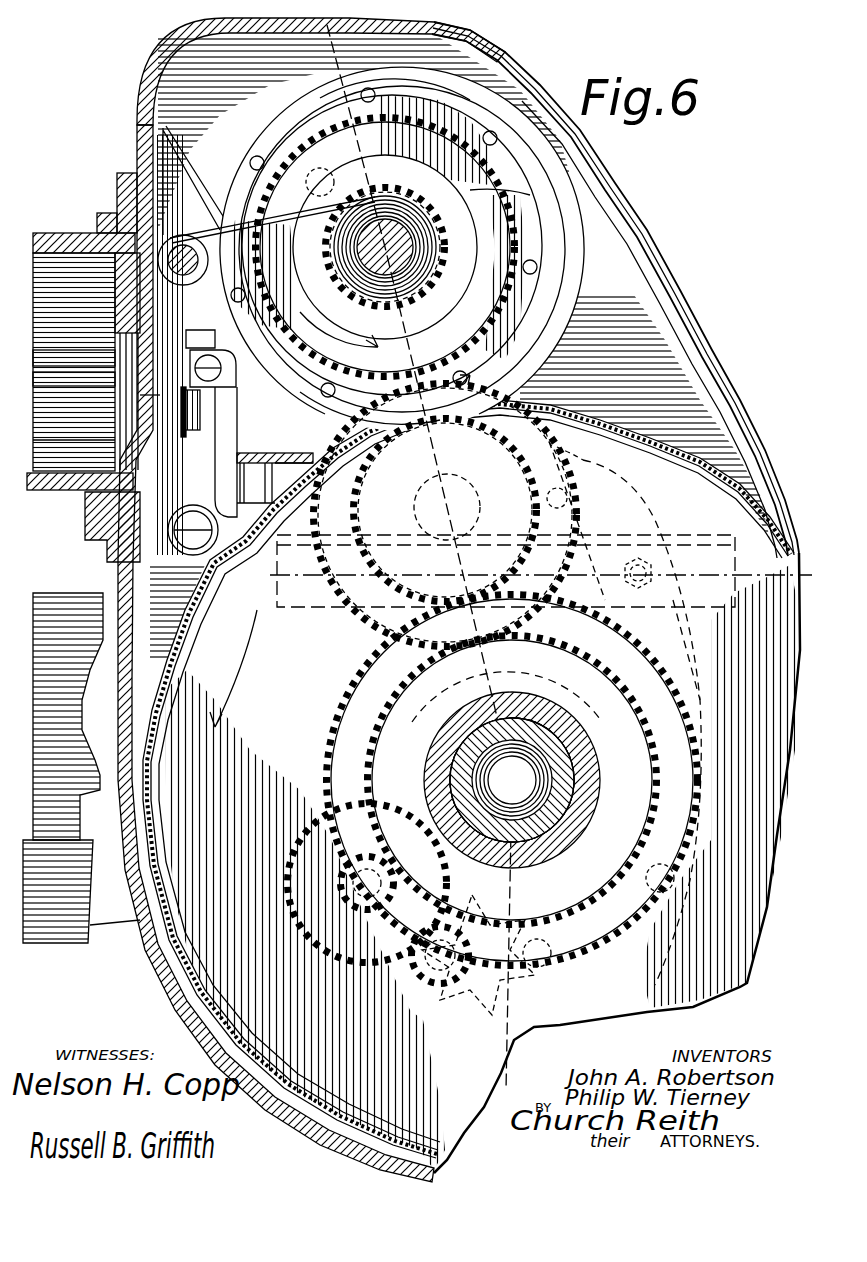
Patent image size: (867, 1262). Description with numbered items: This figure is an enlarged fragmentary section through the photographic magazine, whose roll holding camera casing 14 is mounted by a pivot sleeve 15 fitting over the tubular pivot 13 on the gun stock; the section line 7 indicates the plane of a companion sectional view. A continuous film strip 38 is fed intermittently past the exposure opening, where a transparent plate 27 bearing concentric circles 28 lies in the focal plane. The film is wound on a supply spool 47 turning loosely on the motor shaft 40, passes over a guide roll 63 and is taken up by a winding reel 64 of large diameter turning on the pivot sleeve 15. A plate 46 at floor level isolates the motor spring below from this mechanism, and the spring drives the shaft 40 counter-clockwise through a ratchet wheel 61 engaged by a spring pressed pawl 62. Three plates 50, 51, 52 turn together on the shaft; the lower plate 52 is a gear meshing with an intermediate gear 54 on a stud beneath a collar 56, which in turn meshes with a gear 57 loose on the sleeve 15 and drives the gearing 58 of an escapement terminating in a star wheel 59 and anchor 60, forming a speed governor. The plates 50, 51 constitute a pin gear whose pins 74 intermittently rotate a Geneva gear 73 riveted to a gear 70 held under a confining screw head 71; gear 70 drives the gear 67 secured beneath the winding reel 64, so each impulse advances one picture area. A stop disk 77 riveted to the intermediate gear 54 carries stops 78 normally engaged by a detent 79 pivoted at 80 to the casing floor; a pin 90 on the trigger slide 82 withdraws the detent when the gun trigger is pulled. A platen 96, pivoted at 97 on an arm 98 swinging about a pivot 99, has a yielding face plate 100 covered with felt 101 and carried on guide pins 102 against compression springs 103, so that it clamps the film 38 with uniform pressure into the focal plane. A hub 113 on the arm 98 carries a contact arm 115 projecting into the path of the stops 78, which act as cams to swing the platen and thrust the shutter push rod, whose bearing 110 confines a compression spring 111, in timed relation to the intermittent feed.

The section line 7- 7 is at (415, 557).
The tubular pivot 13 is at (556, 760).
The camera casing 14 is at (700, 333).
The pivot sleeve 15 is at (512, 205).
The transparent plate 27 is at (148, 400).
The concentric circles 28 is at (110, 428).
The film strip 38 is at (210, 215).
The motor shaft 40 is at (372, 262).
The plate 46 is at (400, 84).
The supply spool 47 is at (395, 278).
The disk 50 is at (475, 233).
The disk 51 is at (542, 258).
The gear 52 is at (507, 327).
The intermediate gear 54 is at (625, 486).
The collar 56 is at (330, 890).
The gear 57 is at (576, 717).
The gearing 58 is at (405, 975).
The star wheel 59 is at (459, 1010).
The anchor 60 is at (518, 1006).
The ratchet wheel 61 is at (368, 310).
The spring pressed pawl 62 is at (320, 177).
The guide roll 63 is at (160, 237).
The winding reel 64 is at (187, 950).
The gear 67 is at (678, 670).
The gear 70 is at (445, 510).
The confining screw head 71 is at (450, 485).
The Geneva gear 73 is at (650, 512).
The pins 74 is at (252, 160).
The stop disk 77 is at (419, 386).
The stops 78 is at (582, 462).
The detent 79 is at (700, 700).
The pivot 80 is at (667, 887).
The slide 82 is at (744, 560).
The pin 90 is at (662, 568).
The platen 96 is at (182, 357).
The pivot 97 is at (221, 372).
The arm 98 is at (226, 446).
The pivot 99 is at (198, 546).
The face plate 100 is at (225, 392).
The felt 101 is at (157, 330).
The guide pins 102 is at (182, 352).
The compression springs 103 is at (206, 285).
The bearing 110 is at (74, 389).
The compression spring 111 is at (65, 405).
The hub 113 is at (170, 528).
The contact arm 115 is at (214, 528).